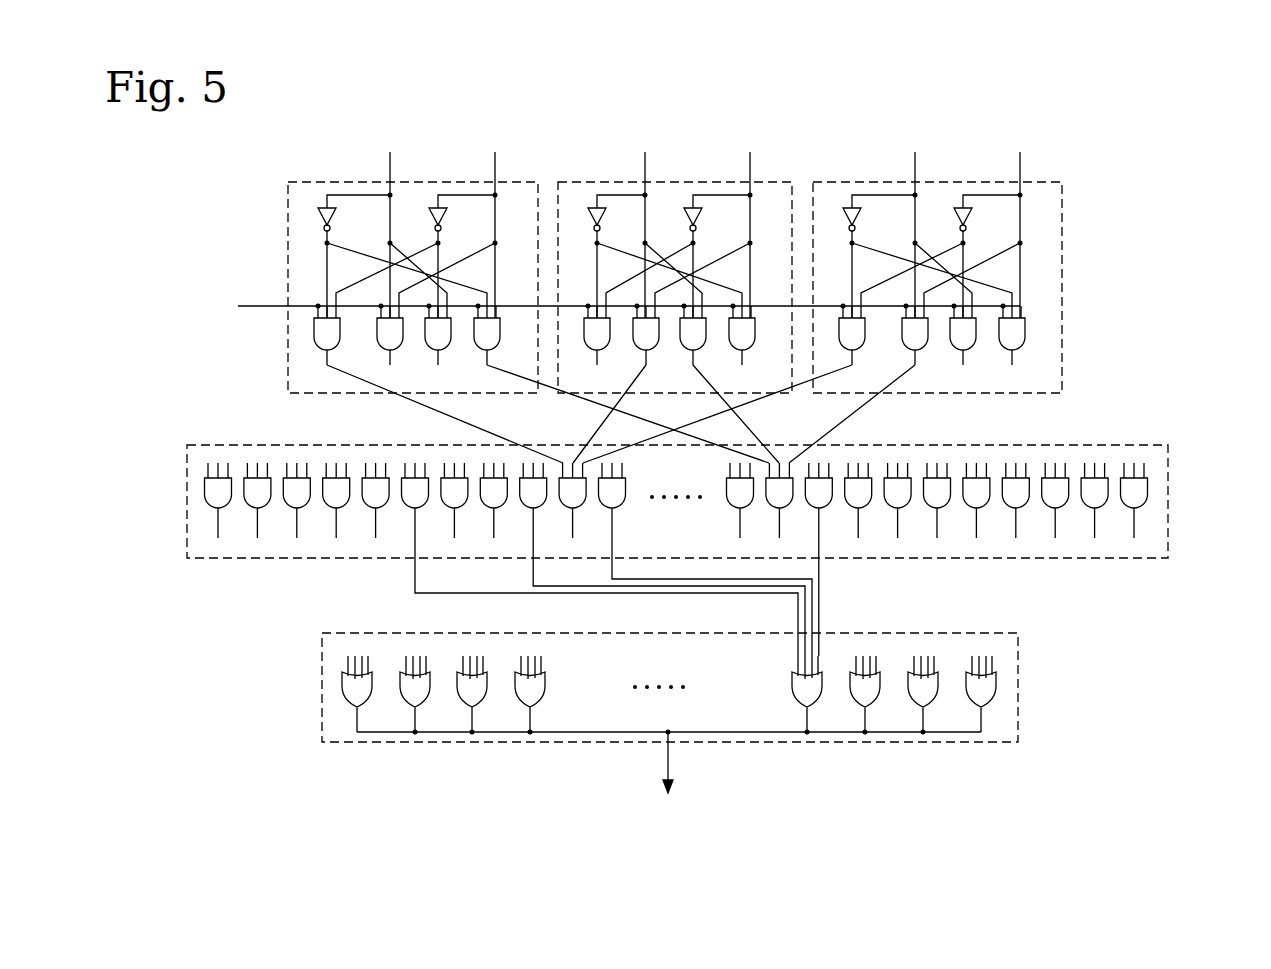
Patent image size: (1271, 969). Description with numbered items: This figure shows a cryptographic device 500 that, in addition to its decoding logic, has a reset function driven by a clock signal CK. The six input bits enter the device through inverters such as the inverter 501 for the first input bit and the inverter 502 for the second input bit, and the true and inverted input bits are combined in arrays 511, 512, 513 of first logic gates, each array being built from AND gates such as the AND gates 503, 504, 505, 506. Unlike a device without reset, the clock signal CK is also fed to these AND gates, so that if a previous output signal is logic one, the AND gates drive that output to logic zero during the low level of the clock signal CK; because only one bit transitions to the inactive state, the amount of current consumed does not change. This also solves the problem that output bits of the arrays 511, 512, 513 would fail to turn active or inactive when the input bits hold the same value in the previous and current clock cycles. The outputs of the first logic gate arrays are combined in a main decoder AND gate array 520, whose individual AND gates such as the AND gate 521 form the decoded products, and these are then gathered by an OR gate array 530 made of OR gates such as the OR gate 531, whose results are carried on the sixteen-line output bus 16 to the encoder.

The cryptographic device 500 is at (1220, 124).
The array of first logic gates 513 is at (330, 182).
The array of first logic gates 512 is at (600, 182).
The array of first logic gates 511 is at (855, 182).
The inverter for A1 502 is at (859, 213).
The inverter for A0 501 is at (970, 213).
The AND gate 506 is at (862, 345).
The AND gate 505 is at (926, 345).
The AND gate 504 is at (974, 345).
The AND gate 503 is at (1023, 345).
The main decoder AND gate array 520 is at (1168, 500).
The AND gate of main decoder 521 is at (1147, 490).
The OR gate array 530 is at (1018, 695).
The OR gate 531 is at (996, 678).
The 16-bit output bus to encoder 16 is at (663, 769).